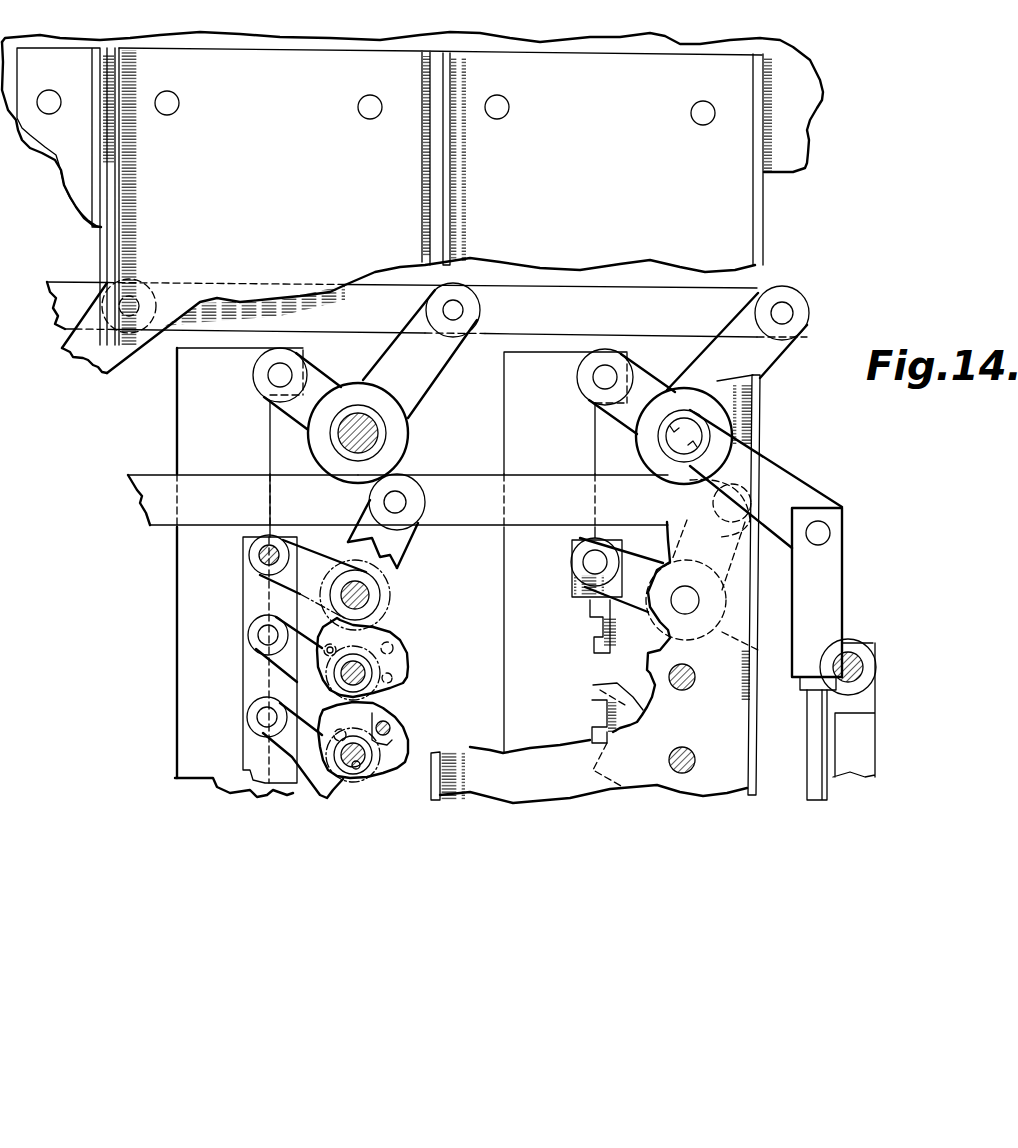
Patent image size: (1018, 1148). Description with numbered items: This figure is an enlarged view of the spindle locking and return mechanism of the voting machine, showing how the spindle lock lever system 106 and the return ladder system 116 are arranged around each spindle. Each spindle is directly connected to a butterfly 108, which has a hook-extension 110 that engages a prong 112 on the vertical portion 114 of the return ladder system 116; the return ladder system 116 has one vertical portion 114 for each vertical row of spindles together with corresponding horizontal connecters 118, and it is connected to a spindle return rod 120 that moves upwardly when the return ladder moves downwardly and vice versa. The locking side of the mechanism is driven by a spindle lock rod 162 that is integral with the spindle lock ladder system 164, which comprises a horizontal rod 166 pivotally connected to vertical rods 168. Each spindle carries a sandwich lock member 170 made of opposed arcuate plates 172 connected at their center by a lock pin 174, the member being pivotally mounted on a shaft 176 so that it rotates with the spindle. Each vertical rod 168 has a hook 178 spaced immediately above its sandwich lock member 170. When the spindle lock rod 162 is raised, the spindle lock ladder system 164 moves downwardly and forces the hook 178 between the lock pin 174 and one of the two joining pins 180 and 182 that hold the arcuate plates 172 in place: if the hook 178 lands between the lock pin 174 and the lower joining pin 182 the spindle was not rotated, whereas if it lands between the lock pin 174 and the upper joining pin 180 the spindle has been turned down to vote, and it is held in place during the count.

The spindle lock lever system 106 is at (210, 743).
The butterfly 108 is at (625, 657).
The hook-extension 110 is at (593, 620).
The prong 112 is at (593, 632).
The vertical portion 114 is at (187, 613).
The return ladder system 116 is at (490, 713).
The horizontal connecter 118 is at (548, 297).
The spindle return rod 120 is at (830, 582).
The spindle lock rod 162 is at (863, 755).
The spindle lock ladder system 164 is at (488, 470).
The horizontal rod 166 is at (150, 482).
The vertical rod 168 is at (250, 588).
The sandwich lock member 170 is at (407, 653).
The arcuate plate 172 is at (400, 750).
The lock pin 174 is at (383, 633).
The shaft 176 is at (355, 765).
The hook 178 is at (287, 692).
The upper joining pin 180 is at (320, 658).
The lower joining pin 182 is at (412, 672).